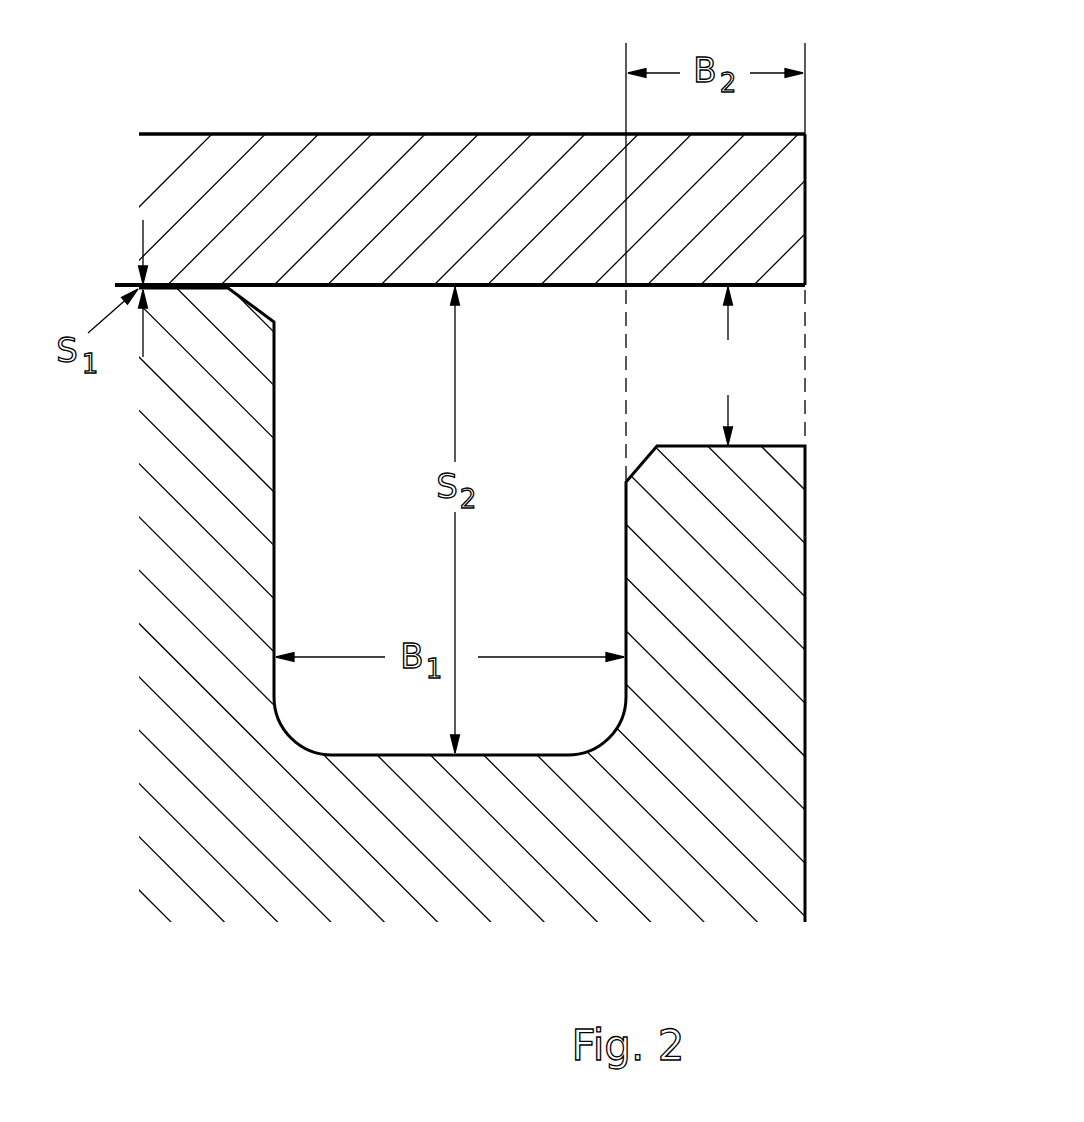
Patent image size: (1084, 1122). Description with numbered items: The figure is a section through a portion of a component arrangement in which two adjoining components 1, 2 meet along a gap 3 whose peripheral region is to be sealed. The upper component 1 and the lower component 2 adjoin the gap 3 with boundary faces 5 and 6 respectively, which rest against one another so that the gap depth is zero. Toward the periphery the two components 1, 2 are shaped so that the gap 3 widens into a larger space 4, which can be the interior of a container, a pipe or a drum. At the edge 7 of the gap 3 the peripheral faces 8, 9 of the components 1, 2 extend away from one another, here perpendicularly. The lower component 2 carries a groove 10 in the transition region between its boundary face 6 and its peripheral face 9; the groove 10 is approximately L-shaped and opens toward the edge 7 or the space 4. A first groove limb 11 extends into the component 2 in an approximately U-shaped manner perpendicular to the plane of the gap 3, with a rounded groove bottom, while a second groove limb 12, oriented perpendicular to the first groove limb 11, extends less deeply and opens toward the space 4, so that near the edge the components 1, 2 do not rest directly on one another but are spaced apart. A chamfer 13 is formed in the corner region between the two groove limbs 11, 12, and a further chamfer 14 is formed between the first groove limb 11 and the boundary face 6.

The component 1 is at (474, 155).
The component 2 is at (762, 801).
The gap 3 is at (213, 287).
The space 4 is at (822, 415).
The boundary face 5 is at (155, 288).
The boundary face 6 is at (168, 292).
The edge 7 is at (808, 287).
The peripheral face 8 is at (808, 152).
The peripheral face 9 is at (807, 650).
The groove 10 is at (393, 347).
The first groove limb 11 is at (313, 565).
The second groove limb 12 is at (760, 392).
The chamfer 13 is at (633, 474).
The chamfer 14 is at (261, 302).